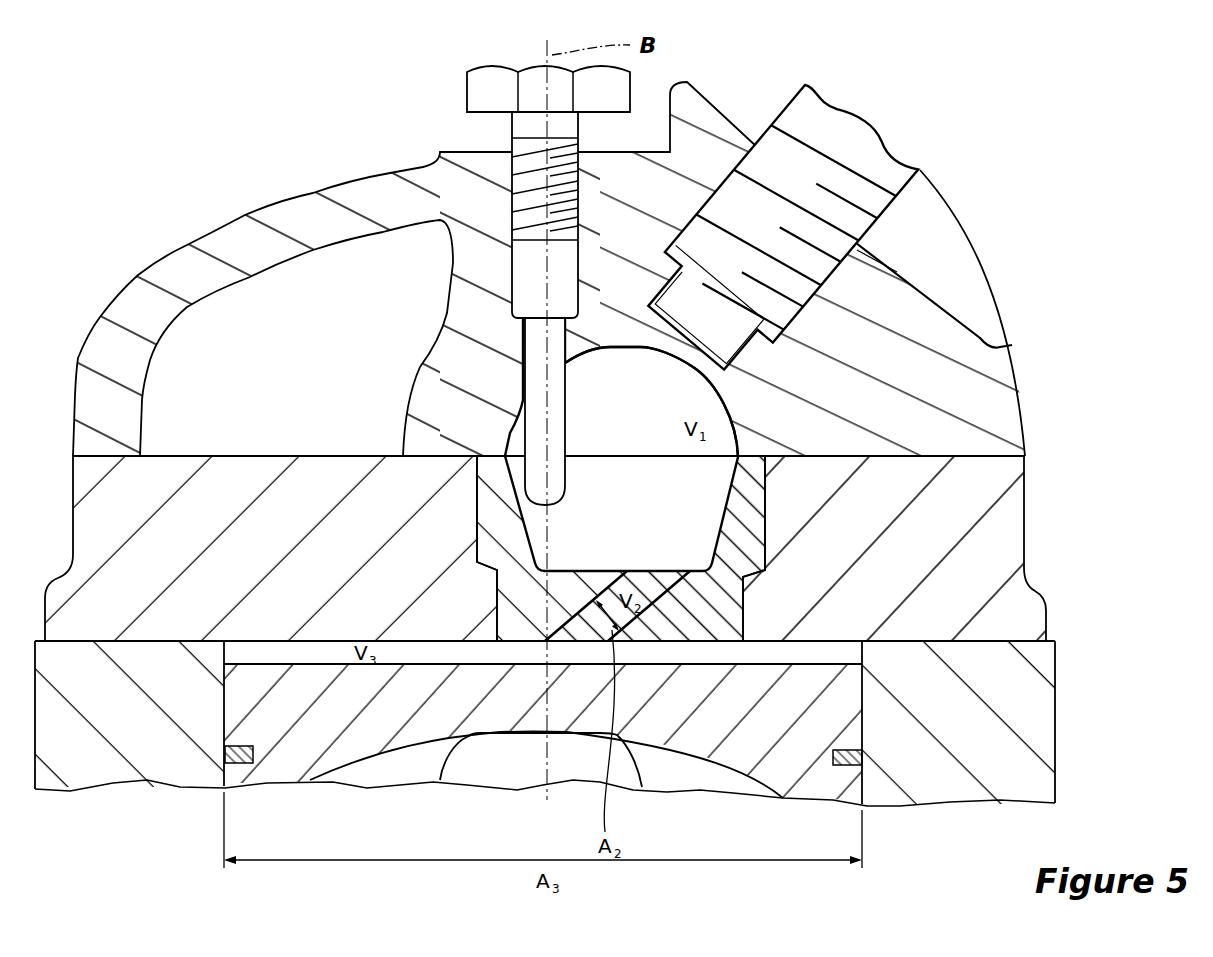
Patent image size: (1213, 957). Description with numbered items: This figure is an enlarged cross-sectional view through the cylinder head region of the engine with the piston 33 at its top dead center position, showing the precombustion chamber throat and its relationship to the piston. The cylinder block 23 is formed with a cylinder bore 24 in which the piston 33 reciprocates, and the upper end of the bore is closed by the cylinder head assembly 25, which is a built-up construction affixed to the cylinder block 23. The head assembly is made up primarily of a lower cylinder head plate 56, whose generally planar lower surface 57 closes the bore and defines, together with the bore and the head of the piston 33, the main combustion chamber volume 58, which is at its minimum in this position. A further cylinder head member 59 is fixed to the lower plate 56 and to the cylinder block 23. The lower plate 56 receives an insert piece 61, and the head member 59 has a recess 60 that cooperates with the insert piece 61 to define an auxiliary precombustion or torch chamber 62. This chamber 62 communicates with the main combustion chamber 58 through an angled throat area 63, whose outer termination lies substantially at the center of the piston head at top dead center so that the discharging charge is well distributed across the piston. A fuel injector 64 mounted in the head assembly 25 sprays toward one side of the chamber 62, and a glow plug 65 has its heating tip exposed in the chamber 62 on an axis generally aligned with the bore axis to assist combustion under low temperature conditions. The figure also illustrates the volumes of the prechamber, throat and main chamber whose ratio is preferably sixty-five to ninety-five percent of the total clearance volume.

The cylinder block 23 is at (1040, 735).
The cylinder bore 24 is at (243, 648).
The cylinder head assembly 25 is at (1020, 354).
The piston 33 is at (850, 697).
The lower cylinder head plate 56 is at (1015, 536).
The lower surface 57 is at (865, 640).
The main combustion chamber volume 58 is at (330, 650).
The cylinder head member 59 is at (1008, 411).
The recess 60 is at (702, 395).
The insert piece 61 is at (747, 502).
The precombustion chamber 62 is at (663, 437).
The throat area 63 is at (662, 588).
The fuel injector 64 is at (890, 168).
The glow plug 65 is at (475, 91).